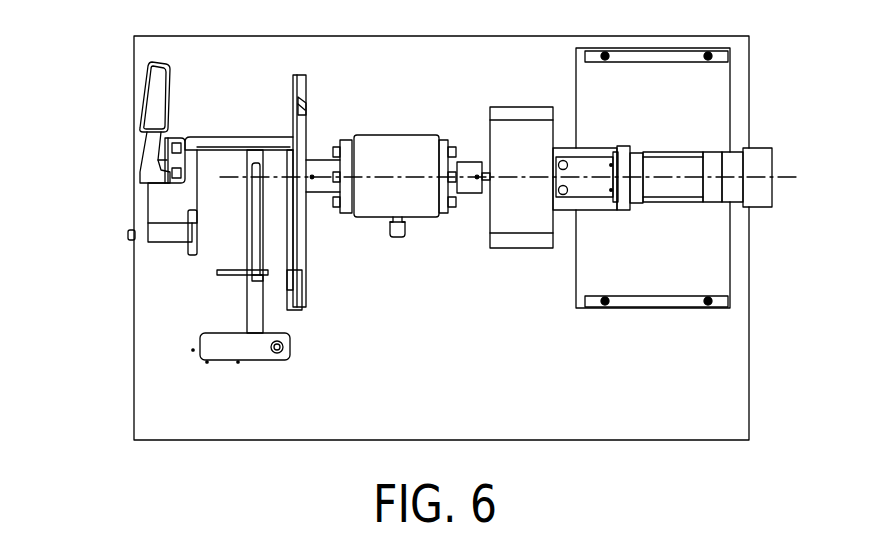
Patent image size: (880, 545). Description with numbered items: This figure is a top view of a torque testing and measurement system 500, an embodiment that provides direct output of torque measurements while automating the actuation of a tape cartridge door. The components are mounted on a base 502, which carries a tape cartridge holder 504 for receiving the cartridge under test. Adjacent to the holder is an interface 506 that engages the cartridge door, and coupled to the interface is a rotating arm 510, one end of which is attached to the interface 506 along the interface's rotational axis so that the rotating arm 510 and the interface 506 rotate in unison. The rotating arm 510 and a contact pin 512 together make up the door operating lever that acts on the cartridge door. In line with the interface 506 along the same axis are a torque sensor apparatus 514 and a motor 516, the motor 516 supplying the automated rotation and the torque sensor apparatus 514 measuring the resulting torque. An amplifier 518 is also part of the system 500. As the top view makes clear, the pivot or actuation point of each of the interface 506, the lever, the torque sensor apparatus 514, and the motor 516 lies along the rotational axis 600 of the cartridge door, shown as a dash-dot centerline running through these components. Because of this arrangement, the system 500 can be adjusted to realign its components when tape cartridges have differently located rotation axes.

The torque testing and measurement system 500 is at (94, 131).
The base 502 is at (565, 401).
The tape cartridge holder 504 is at (202, 140).
The interface 506 is at (298, 93).
The rotating arm 510 is at (257, 232).
The contact pin 512 is at (227, 277).
The torque sensor apparatus 514 is at (423, 207).
The motor 516 is at (687, 221).
The amplifier 518 is at (710, 105).
The rotational axis 600 is at (323, 178).